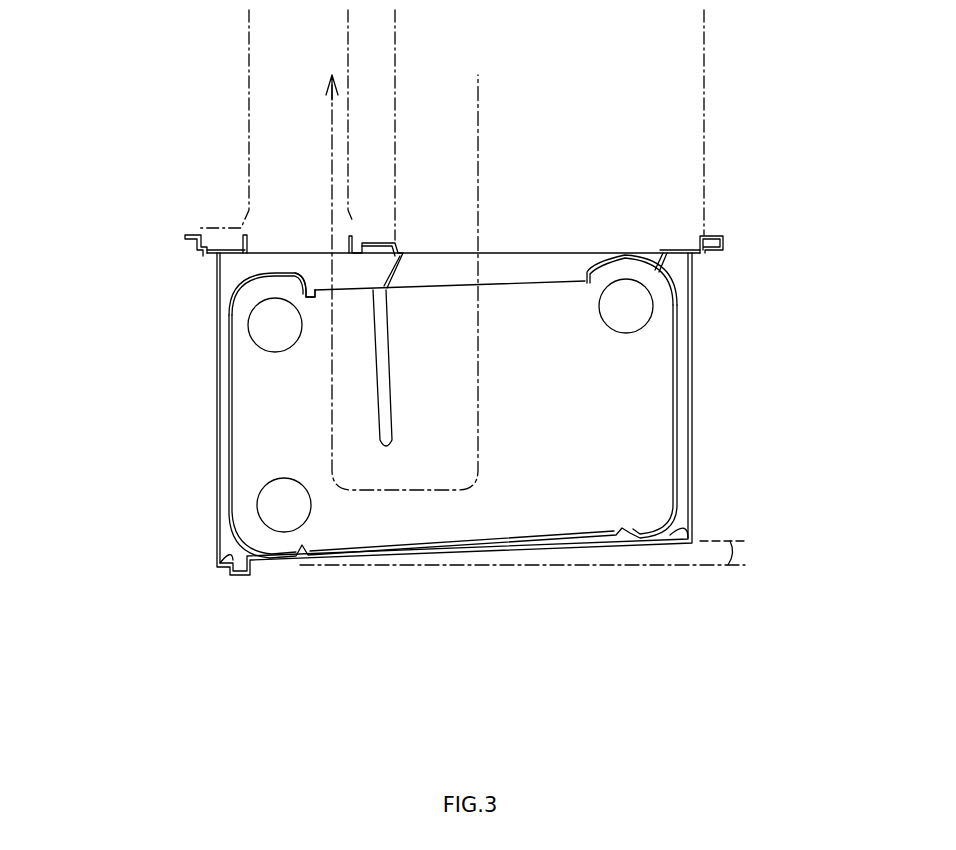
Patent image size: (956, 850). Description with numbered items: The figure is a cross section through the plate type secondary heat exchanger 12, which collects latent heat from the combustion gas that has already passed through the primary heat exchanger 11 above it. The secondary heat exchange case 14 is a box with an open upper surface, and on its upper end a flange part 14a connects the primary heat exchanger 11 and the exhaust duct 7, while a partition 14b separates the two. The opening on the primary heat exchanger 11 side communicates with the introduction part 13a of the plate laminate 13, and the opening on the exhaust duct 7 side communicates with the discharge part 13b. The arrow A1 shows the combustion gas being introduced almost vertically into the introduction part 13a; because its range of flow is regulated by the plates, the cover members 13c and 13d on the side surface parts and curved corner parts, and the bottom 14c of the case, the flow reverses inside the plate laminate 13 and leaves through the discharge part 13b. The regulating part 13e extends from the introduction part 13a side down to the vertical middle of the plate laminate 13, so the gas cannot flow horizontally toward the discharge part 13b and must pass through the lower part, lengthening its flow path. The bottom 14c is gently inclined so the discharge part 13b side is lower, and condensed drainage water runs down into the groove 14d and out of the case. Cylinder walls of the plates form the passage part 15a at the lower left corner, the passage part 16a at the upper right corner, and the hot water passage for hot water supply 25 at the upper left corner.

The exhaust duct 7 is at (249, 50).
The primary heat exchanger 11 is at (712, 43).
The arrow indicating combustion gas flow A1 is at (332, 117).
The secondary heat exchanger 12 is at (205, 395).
The plate laminate 13 is at (462, 407).
The introduction part 13a is at (528, 278).
The discharge part 13b is at (330, 290).
The cover member 13c is at (677, 300).
The cover member 13d is at (240, 282).
The regulating part 13e is at (392, 418).
The secondary heat exchange case 14 is at (457, 346).
The flange part 14a is at (197, 243).
The partition 14b is at (377, 240).
The bottom 14c is at (690, 530).
The groove 14d is at (232, 565).
The passage part 15a is at (278, 505).
The passage part 16a is at (626, 320).
The hot water passage for hot water supply 25 is at (268, 325).